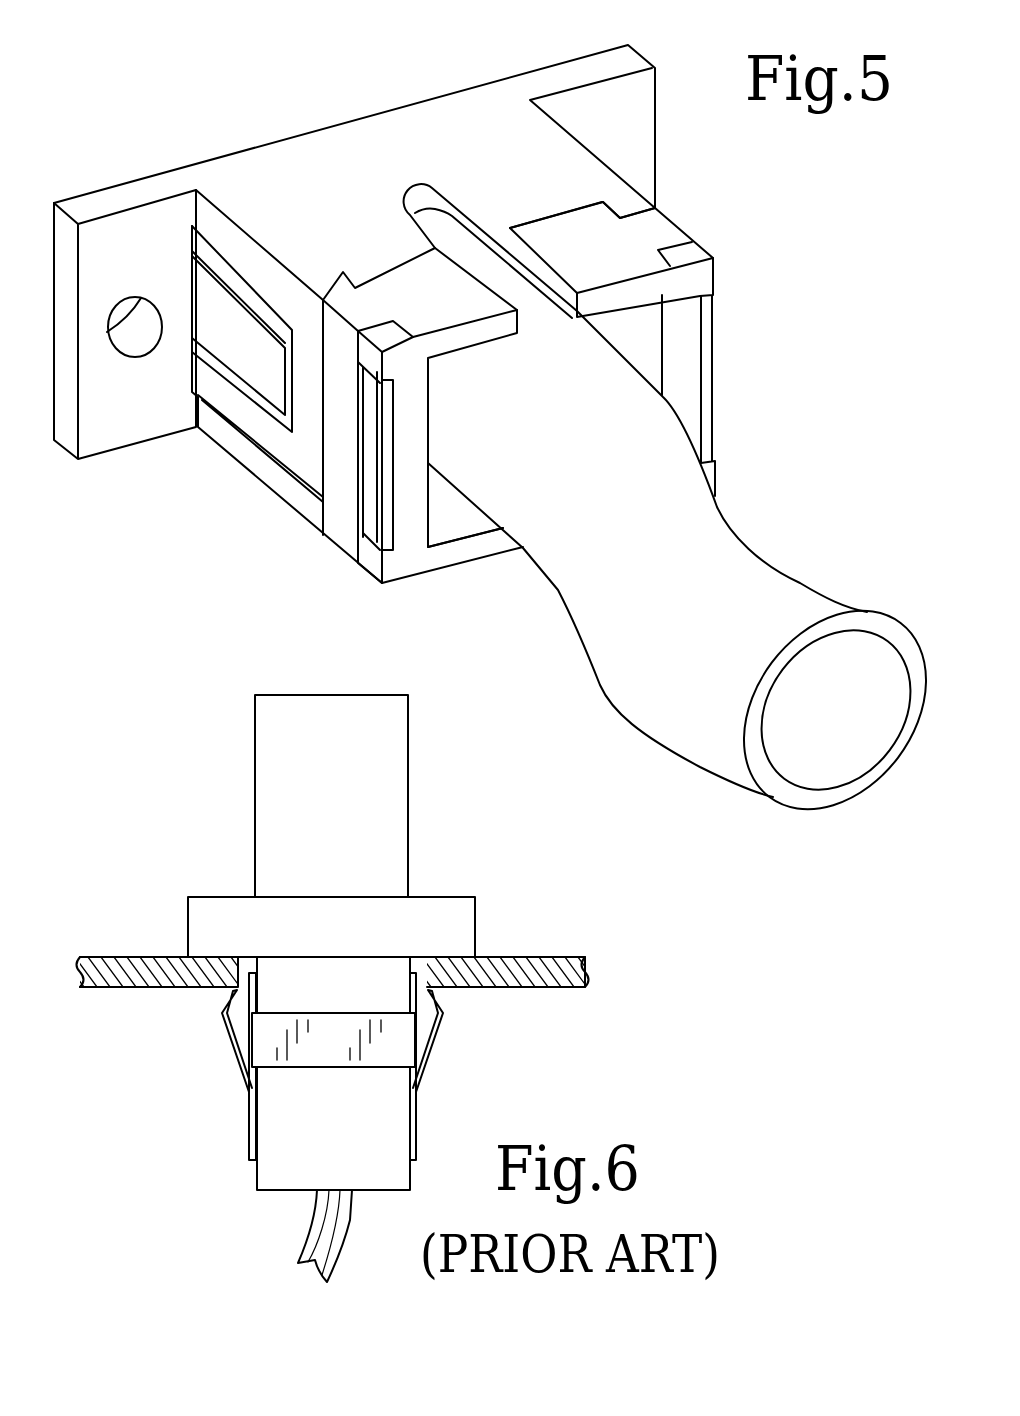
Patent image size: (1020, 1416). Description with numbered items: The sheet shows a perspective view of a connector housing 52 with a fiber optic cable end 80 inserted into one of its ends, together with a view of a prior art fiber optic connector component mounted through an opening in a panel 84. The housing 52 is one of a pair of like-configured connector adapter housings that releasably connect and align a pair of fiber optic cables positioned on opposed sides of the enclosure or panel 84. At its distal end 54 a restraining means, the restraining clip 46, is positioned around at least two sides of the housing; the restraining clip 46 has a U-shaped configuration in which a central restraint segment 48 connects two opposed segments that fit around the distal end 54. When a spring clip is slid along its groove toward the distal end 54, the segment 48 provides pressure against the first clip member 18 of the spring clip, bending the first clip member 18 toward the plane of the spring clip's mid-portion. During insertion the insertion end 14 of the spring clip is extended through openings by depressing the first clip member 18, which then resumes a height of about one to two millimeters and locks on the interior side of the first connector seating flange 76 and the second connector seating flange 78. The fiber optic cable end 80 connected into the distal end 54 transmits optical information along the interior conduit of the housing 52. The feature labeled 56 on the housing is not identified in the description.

In FIG. 5, the insertion end 14 is at (708, 383).
In FIG. 5, the first clip member 18 is at (210, 339).
In FIG. 5, the restraining clip 46 is at (337, 520).
In FIG. 5, the central restraint segment 48 is at (330, 431).
In FIG. 5, the connector housing 52 is at (497, 159).
In FIG. 5, the distal end 54 is at (697, 285).
In FIG. 5, the opening (56') 56 is at (450, 513).
In FIG. 5, the first connector seating flange 76 is at (123, 427).
In FIG. 5, the second connector seating flange 78 is at (635, 97).
In FIG. 5, the first fiber optic cable end 80 is at (682, 645).
In FIG. 6, the panel 84 is at (538, 955).